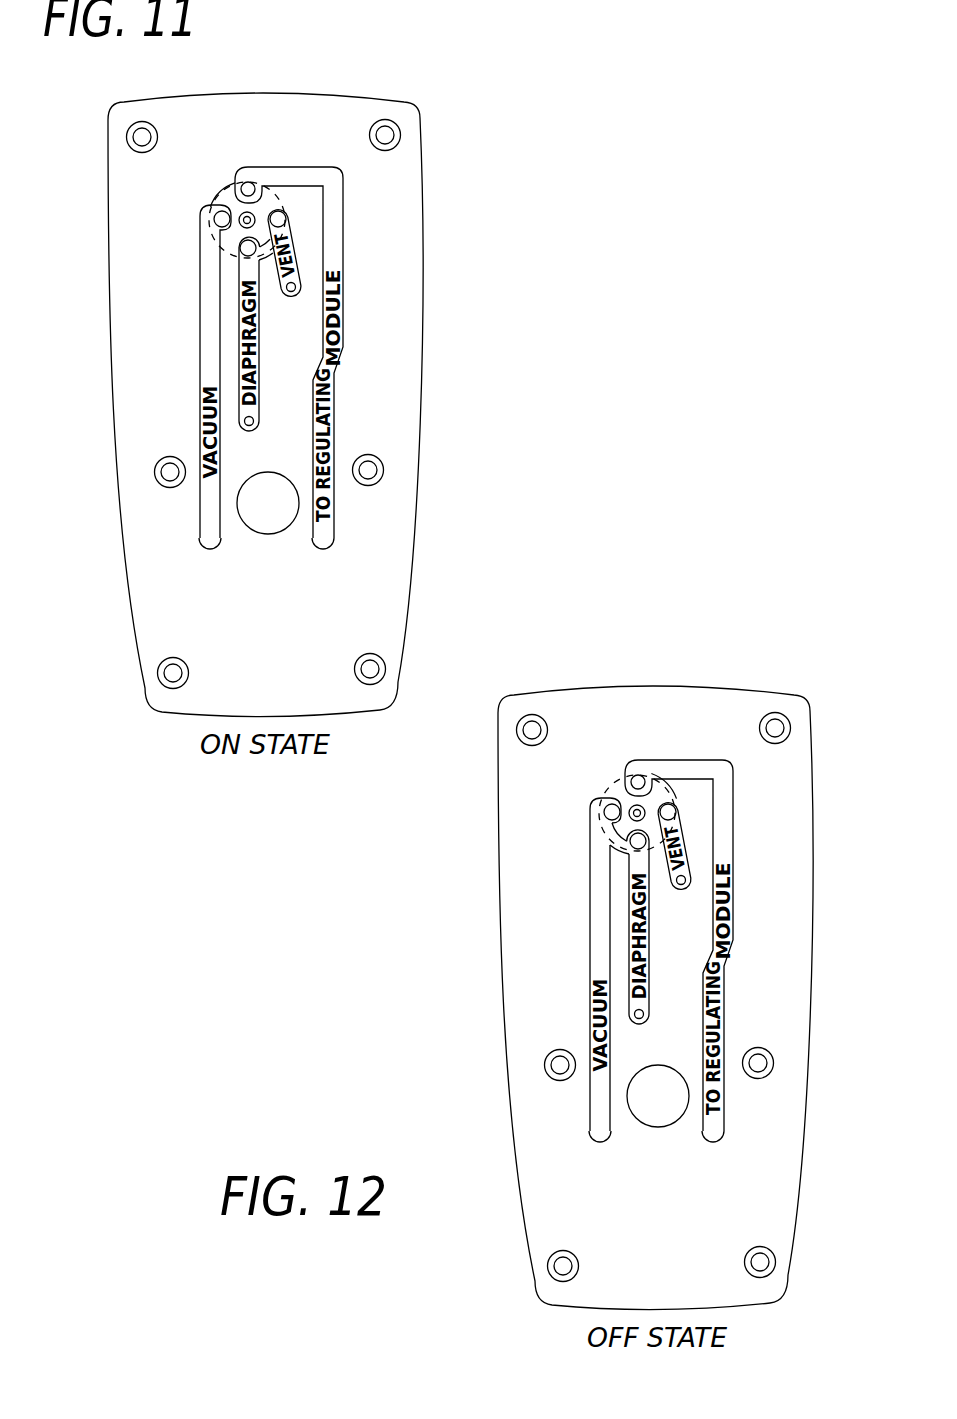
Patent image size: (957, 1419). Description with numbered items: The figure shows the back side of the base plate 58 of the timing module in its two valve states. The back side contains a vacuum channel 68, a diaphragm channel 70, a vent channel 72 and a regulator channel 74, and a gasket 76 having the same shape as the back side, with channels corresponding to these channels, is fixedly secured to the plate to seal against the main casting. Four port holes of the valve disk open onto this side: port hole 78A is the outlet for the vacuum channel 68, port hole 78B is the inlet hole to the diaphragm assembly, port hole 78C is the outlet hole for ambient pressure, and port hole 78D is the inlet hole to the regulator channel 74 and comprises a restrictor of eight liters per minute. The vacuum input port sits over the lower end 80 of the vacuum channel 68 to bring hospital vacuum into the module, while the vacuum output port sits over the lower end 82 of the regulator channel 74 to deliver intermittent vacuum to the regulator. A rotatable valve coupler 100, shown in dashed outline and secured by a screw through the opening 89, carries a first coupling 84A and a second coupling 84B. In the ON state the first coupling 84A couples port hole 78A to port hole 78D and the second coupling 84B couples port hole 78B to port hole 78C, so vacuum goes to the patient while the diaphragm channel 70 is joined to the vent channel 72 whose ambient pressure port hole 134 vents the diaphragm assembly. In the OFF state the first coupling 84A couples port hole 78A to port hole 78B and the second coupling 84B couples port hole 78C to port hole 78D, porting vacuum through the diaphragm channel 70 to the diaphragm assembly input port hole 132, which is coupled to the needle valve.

In FIG. 11, the base plate 58 is at (432, 508).
In FIG. 12, the base plate 58 is at (494, 1063).
In FIG. 11, the vacuum channel 68 is at (200, 385).
In FIG. 12, the vacuum channel 68 is at (590, 955).
In FIG. 11, the diaphragm channel 70 is at (262, 323).
In FIG. 12, the diaphragm channel 70 is at (650, 922).
In FIG. 11, the vent channel 72 is at (298, 240).
In FIG. 12, the vent channel 72 is at (695, 835).
In FIG. 11, the regulator channel 74 is at (337, 405).
In FIG. 12, the regulator channel 74 is at (735, 860).
In FIG. 11, the gasket 76 is at (395, 245).
In FIG. 12, the gasket 76 is at (758, 1155).
In FIG. 11, the port hole 78A is at (212, 218).
In FIG. 12, the port hole 78A is at (600, 815).
In FIG. 11, the port hole 78B is at (246, 253).
In FIG. 12, the port hole 78B is at (635, 850).
In FIG. 11, the port hole 78C is at (285, 213).
In FIG. 12, the port hole 78C is at (676, 812).
In FIG. 11, the port hole 78D is at (253, 180).
In FIG. 12, the port hole 78D is at (640, 780).
In FIG. 11, the lower end of the vacuum channel 80 is at (205, 540).
In FIG. 12, the lower end of the vacuum channel 80 is at (600, 1136).
In FIG. 11, the lower end of the regulator channel 82 is at (330, 548).
In FIG. 12, the lower end of the regulator channel 82 is at (713, 1136).
In FIG. 11, the first coupling 84A is at (208, 196).
In FIG. 12, the first coupling 84A is at (606, 848).
In FIG. 11, the second coupling 84B is at (264, 258).
In FIG. 12, the second coupling 84B is at (685, 790).
In FIG. 11, the opening 89 is at (247, 212).
In FIG. 12, the opening 89 is at (632, 808).
In FIG. 11, the valve coupler 100 is at (218, 172).
In FIG. 12, the valve coupler 100 is at (603, 775).
In FIG. 11, the diaphragm assembly input port hole 132 is at (256, 422).
In FIG. 12, the diaphragm assembly input port hole 132 is at (646, 1015).
In FIG. 11, the ambient pressure port hole 134 is at (300, 248).
In FIG. 12, the ambient pressure port hole 134 is at (680, 887).